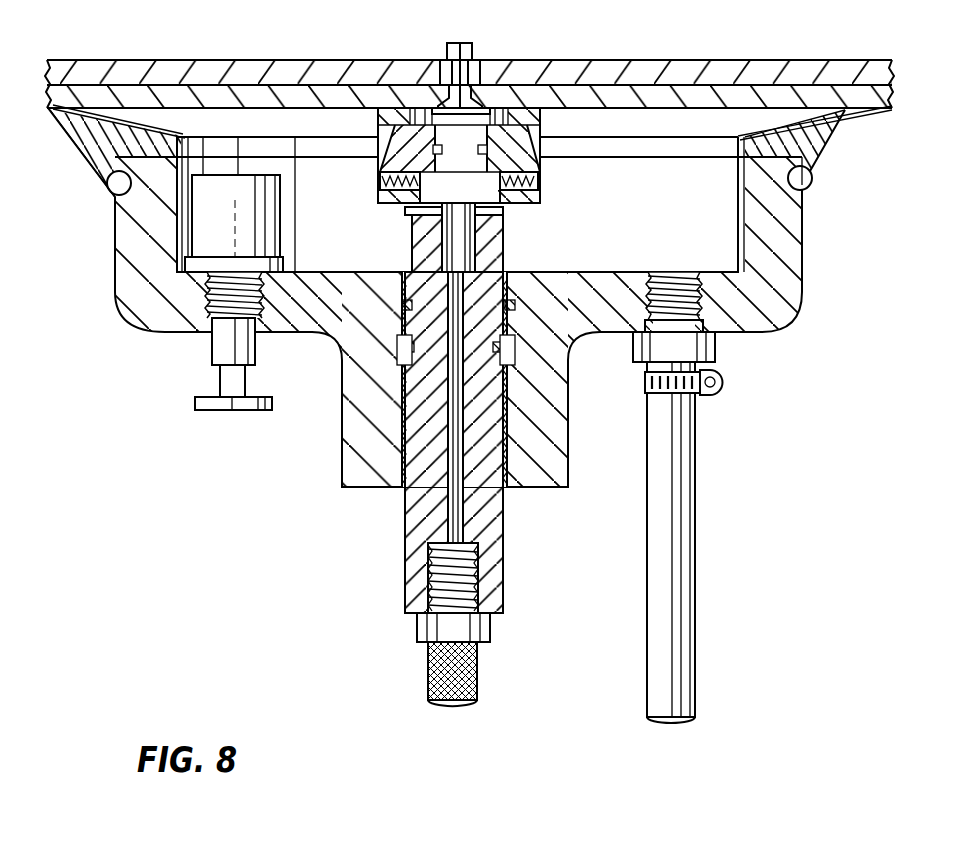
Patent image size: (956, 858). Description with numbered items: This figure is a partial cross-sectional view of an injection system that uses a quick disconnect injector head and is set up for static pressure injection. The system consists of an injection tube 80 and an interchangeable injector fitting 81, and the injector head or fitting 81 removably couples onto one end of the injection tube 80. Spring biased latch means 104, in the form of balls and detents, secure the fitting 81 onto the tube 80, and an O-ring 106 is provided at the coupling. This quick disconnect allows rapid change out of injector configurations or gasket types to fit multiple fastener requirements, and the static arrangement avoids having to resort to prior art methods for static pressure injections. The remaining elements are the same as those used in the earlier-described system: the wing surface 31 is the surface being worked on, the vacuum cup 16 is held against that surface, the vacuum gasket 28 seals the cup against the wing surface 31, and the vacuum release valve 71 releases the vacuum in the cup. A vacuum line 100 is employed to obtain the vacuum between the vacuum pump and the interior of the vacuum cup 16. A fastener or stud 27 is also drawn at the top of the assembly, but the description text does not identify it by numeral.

The vacuum cup 16 is at (780, 322).
The mounting stud 27 is at (466, 43).
The vacuum gasket 28 is at (818, 160).
The wing surface 31 is at (876, 115).
The vacuum release valve 71 is at (207, 365).
The injection tube 80 is at (405, 545).
The injector head or fitting 81 is at (376, 128).
The vacuum line 100 is at (694, 560).
The spring biased latch means 104 is at (405, 202).
The O-ring 106 is at (488, 152).